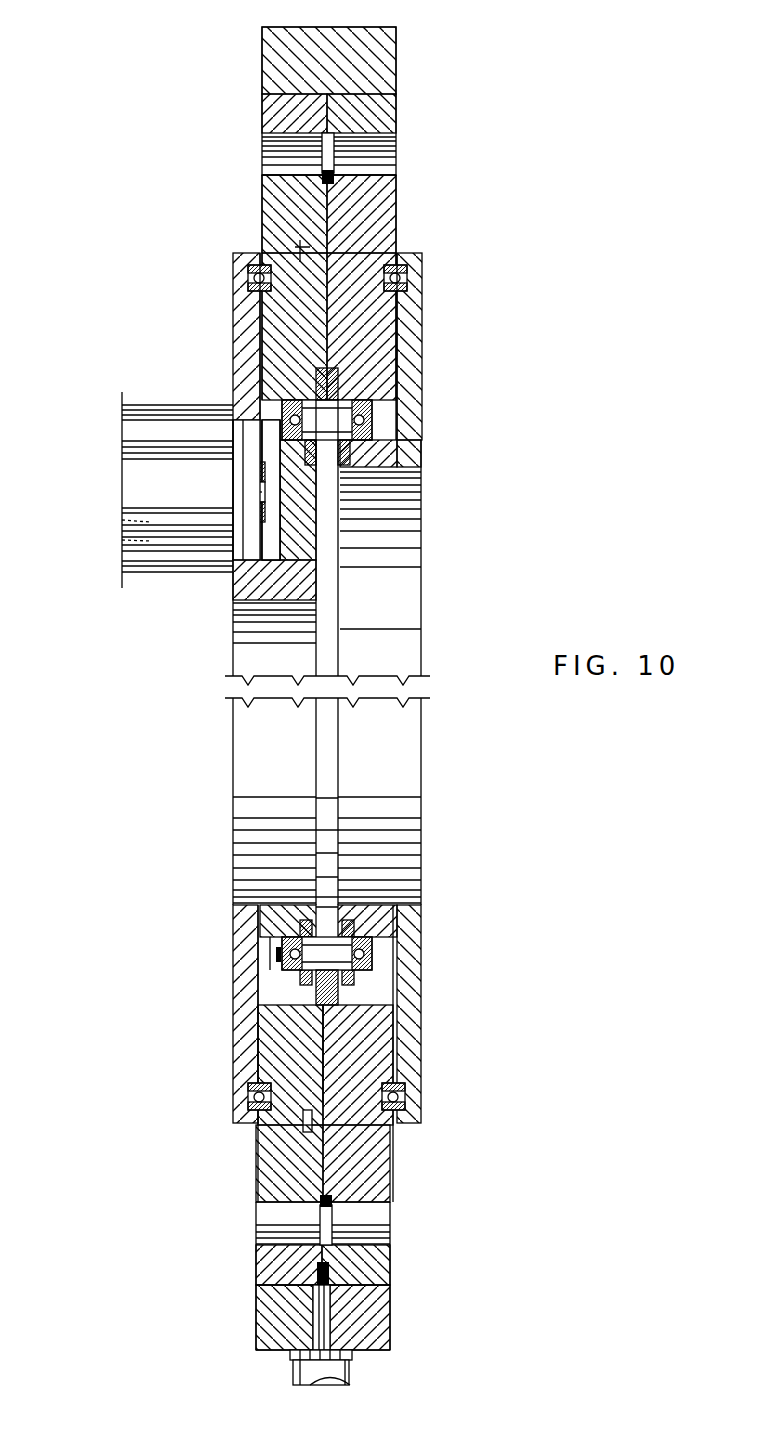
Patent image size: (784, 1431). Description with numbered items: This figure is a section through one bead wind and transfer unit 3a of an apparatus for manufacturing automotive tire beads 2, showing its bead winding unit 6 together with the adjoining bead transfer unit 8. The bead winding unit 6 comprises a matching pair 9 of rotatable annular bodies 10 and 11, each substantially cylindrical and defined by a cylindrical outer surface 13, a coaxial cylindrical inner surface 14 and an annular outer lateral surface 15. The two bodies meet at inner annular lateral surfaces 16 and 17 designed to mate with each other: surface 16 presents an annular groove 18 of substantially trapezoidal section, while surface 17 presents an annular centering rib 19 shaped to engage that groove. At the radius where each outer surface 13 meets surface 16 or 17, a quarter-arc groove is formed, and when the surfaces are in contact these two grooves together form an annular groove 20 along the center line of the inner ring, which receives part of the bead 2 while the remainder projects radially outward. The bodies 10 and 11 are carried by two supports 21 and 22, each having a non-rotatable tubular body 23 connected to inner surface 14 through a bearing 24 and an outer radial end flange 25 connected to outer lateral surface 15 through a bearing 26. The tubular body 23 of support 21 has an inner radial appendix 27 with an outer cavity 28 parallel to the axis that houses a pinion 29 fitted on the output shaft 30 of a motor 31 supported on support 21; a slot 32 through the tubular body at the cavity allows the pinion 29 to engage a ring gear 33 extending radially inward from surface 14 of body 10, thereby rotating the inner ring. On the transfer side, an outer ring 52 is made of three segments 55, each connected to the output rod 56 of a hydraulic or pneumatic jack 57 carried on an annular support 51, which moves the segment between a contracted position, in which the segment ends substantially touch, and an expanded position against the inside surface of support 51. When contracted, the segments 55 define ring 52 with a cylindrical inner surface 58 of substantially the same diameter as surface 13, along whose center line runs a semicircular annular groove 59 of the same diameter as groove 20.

The tire bead 2 is at (400, 170).
The bead wind and transfer unit 3a is at (488, 380).
The bead winding unit 6 is at (331, 543).
The bead transfer unit 8 is at (426, 53).
The matching pair of rotatable annular bodies 9 is at (398, 241).
The rotatable annular body 10 is at (273, 200).
The rotatable annular body 11 is at (370, 1192).
The cylindrical outer surface 13 is at (258, 1212).
The cylindrical inner surface 14 is at (280, 938).
The annular outer lateral surface 15 is at (256, 324).
The inner annular lateral surface 16 is at (332, 1080).
The inner annular lateral surface 17 is at (323, 1030).
The annular groove 18 is at (310, 1120).
The annular centering rib 19 is at (252, 250).
The annular groove 20 is at (318, 1214).
The non-annular rotatable support 21 is at (234, 376).
The non-annular rotatable support 22 is at (421, 436).
The non-rotatable tubular body 23 is at (262, 905).
The bearing 24 is at (300, 983).
The outer radial end flange 25 is at (245, 1060).
The bearing 26 is at (248, 1100).
The inner radial appendix 27 is at (252, 590).
The outer cavity 28 is at (271, 543).
The pinion 29 is at (260, 522).
The output shaft 30 is at (340, 490).
The motor 31 is at (153, 497).
The slot 32 is at (265, 459).
The ring gear 33 is at (265, 948).
The annular support 51 is at (272, 60).
The outer ring 52 is at (403, 118).
The segment 55 is at (272, 113).
The output rod 56 is at (380, 1333).
The hydraulic or pneumatic jack 57 is at (355, 1365).
The cylindrical inner surface 58 is at (370, 1240).
The annular groove 59 is at (312, 1250).